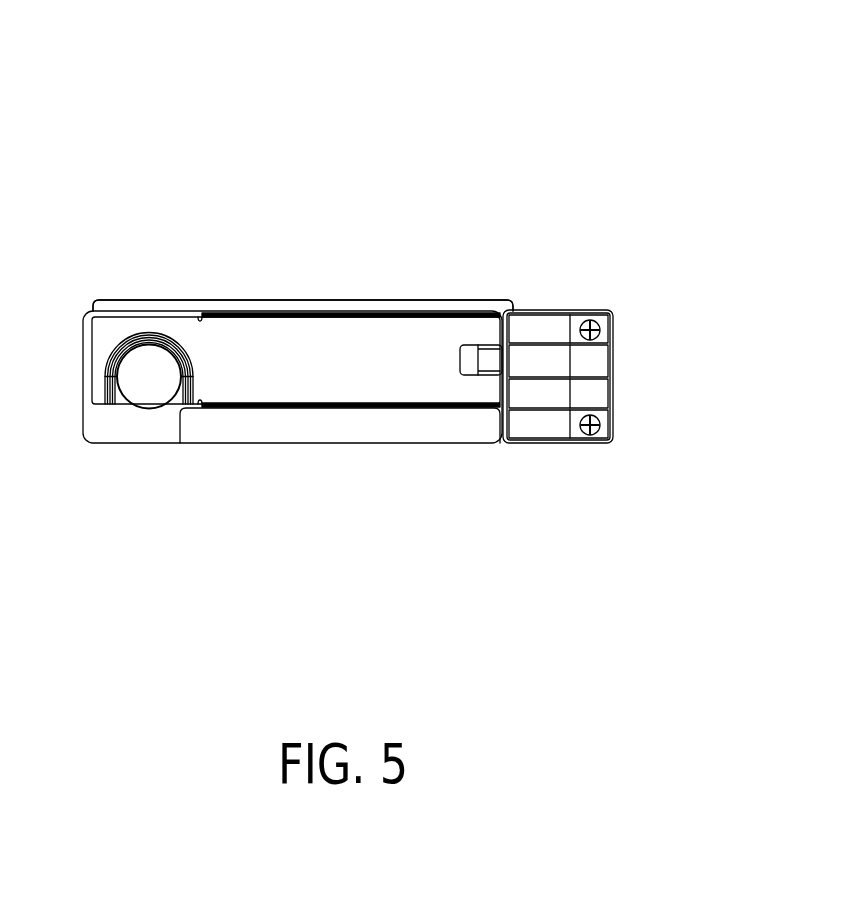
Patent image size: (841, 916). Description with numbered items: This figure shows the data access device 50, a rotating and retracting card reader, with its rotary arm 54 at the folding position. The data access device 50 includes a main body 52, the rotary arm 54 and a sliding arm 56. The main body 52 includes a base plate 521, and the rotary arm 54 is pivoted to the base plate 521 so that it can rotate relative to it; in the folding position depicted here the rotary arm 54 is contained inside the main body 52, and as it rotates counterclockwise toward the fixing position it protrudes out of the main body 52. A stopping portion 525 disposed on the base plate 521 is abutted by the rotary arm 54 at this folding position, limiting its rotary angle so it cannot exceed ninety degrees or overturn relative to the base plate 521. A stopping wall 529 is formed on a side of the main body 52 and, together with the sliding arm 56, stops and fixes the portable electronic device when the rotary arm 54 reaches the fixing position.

The data access device 50 is at (598, 84).
The main body 52 is at (35, 553).
The base plate 521 is at (150, 427).
The stopping portion 525 is at (237, 423).
The stopping wall 529 is at (110, 303).
The rotary arm 54 is at (258, 355).
The sliding arm 56 is at (537, 360).